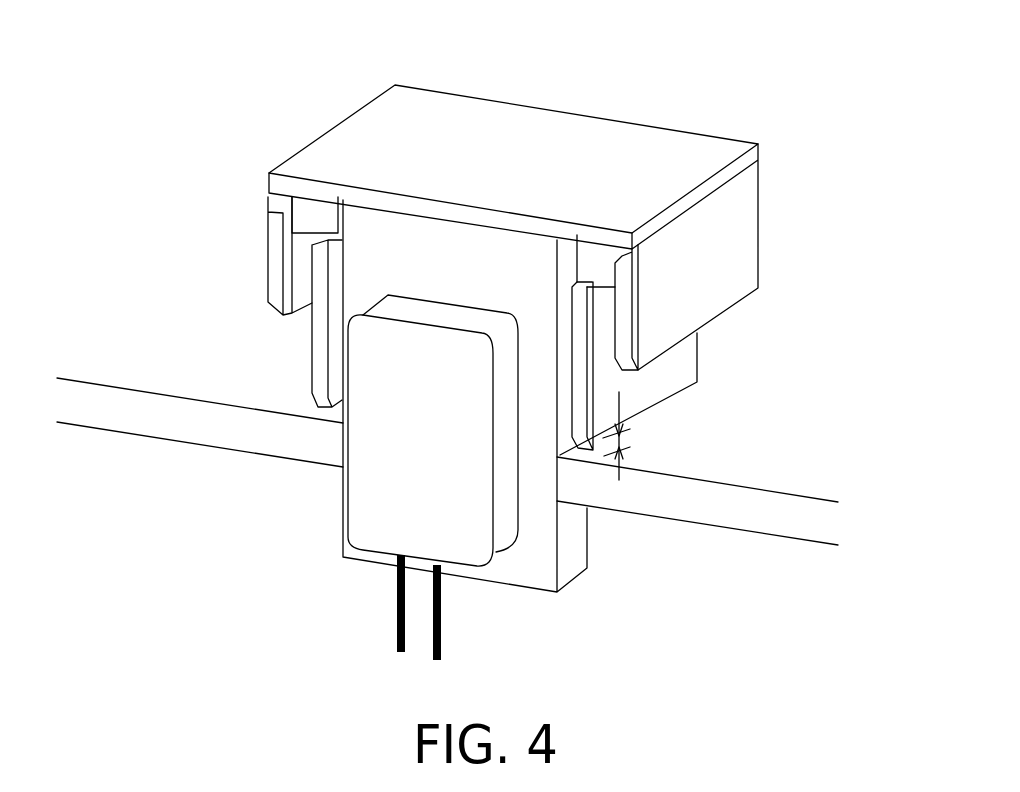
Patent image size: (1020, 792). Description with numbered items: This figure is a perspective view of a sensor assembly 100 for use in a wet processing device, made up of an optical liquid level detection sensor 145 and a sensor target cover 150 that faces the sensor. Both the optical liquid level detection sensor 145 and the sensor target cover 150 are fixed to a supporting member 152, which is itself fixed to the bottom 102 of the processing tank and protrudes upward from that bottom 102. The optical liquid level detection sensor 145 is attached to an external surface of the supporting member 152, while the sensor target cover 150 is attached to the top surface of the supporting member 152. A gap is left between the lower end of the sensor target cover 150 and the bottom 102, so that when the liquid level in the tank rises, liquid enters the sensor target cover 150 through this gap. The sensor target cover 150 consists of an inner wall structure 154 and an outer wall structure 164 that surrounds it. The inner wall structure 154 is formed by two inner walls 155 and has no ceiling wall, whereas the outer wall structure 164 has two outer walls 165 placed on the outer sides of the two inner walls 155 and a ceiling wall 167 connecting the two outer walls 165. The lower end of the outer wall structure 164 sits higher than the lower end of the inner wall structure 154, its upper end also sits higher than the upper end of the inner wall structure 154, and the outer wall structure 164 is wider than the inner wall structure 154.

The sensor assembly 100 is at (226, 154).
The bottom 102 is at (118, 432).
The optical liquid level detection sensor 145 is at (392, 492).
The sensor target cover 150 is at (620, 103).
The supporting member 152 is at (500, 265).
The inner wall structure 154 is at (702, 353).
The inner walls 155 is at (312, 353).
The outer wall structure 164 is at (450, 118).
The outer walls 165 is at (268, 258).
The ceiling wall 167 is at (362, 137).